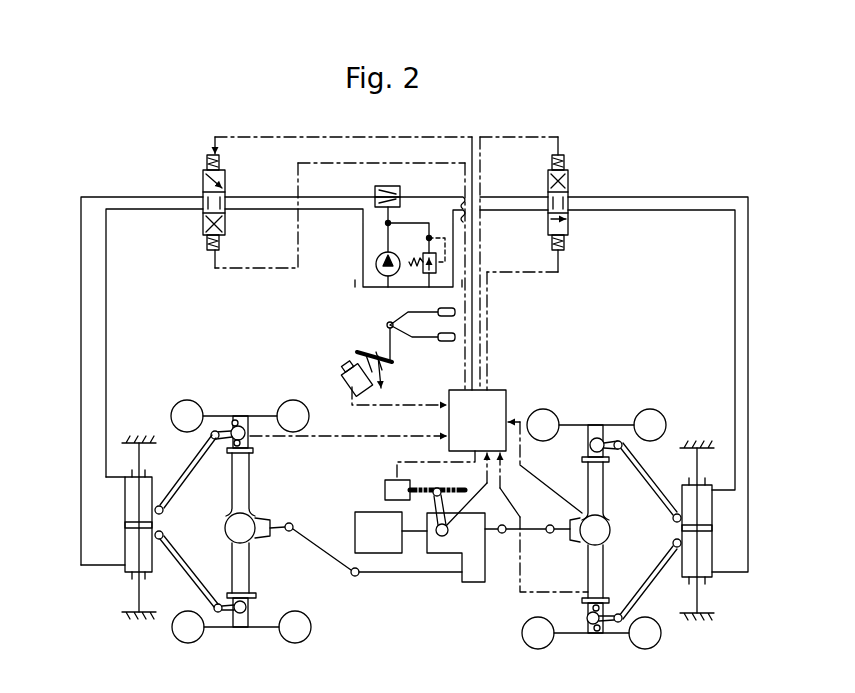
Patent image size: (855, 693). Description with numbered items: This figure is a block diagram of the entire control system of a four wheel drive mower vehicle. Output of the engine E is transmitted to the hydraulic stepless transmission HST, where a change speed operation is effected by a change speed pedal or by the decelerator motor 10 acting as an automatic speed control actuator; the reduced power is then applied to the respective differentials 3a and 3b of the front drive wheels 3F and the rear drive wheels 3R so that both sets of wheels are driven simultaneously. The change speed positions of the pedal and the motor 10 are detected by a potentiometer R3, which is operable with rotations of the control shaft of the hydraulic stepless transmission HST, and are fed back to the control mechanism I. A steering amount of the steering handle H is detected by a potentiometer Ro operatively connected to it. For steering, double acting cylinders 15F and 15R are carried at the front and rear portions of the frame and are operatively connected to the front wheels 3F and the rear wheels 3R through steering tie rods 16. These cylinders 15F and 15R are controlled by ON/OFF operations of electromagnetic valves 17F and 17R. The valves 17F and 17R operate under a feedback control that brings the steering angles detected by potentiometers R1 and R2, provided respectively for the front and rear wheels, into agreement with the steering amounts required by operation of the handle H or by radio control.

The electromagnetic valve 17F is at (203, 180).
The electromagnetic valve 17R is at (568, 180).
The control mechanism I is at (419, 489).
The potentiometer Ro is at (352, 370).
The steering handle H is at (433, 339).
The front drive wheels 3F is at (180, 404).
The rear drive wheels 3R is at (650, 409).
The potentiometer R1 is at (228, 424).
The potentiometer R2 is at (606, 626).
The potentiometer R3 is at (437, 536).
The differential 3a is at (252, 538).
The differential 3b is at (584, 541).
The double acting cylinder 15F is at (128, 573).
The double acting cylinder 15R is at (708, 577).
The steering tie rods 16 is at (177, 550).
The hydraulic stepless transmission HST is at (474, 583).
The engine E is at (391, 532).
The decelerator motor 10 is at (385, 485).